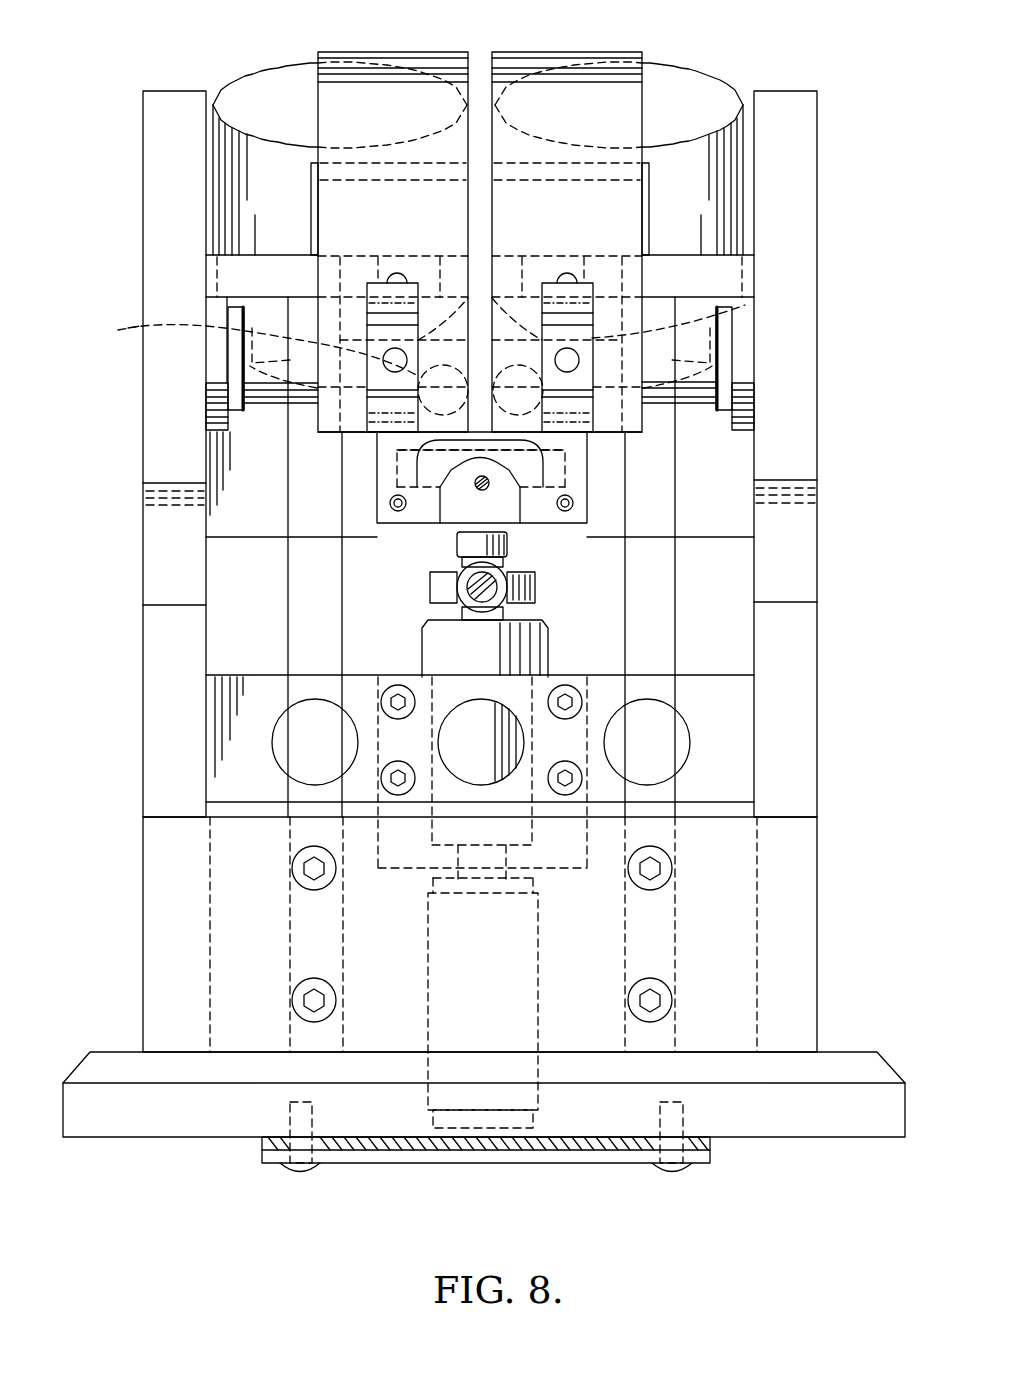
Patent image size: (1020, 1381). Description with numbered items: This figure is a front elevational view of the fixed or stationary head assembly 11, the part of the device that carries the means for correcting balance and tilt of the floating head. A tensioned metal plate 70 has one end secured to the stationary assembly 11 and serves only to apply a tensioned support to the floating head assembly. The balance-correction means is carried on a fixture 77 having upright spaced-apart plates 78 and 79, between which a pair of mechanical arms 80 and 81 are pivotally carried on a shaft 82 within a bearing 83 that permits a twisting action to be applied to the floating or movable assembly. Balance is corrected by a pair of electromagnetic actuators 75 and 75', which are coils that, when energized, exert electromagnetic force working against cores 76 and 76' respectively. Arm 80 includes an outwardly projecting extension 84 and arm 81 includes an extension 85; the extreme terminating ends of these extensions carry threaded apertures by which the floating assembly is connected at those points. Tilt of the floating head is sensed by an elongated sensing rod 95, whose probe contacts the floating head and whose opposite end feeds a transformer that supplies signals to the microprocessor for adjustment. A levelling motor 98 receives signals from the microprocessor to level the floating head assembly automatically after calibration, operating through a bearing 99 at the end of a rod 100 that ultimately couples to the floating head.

The fixed or stationary head assembly 11 is at (110, 800).
The tensioned metal plate 70 is at (378, 1152).
The electromagnetic actuator 75 is at (340, 131).
The electromagnetic actuator 75' is at (619, 130).
The core 76 is at (250, 385).
The core 76' is at (715, 384).
The fixture 77 is at (840, 1050).
The upright plate 78 is at (147, 195).
The upright plate 79 is at (806, 402).
The mechanical arm 80 is at (443, 63).
The mechanical arm 81 is at (537, 63).
The shaft 82 is at (414, 356).
The bearing 83 is at (213, 403).
The extension 84 is at (370, 373).
The extension 85 is at (590, 370).
The sensing rod 95 is at (488, 490).
The levelling motor 98 is at (533, 847).
The bearing 99 is at (430, 583).
The rod 100 is at (535, 584).